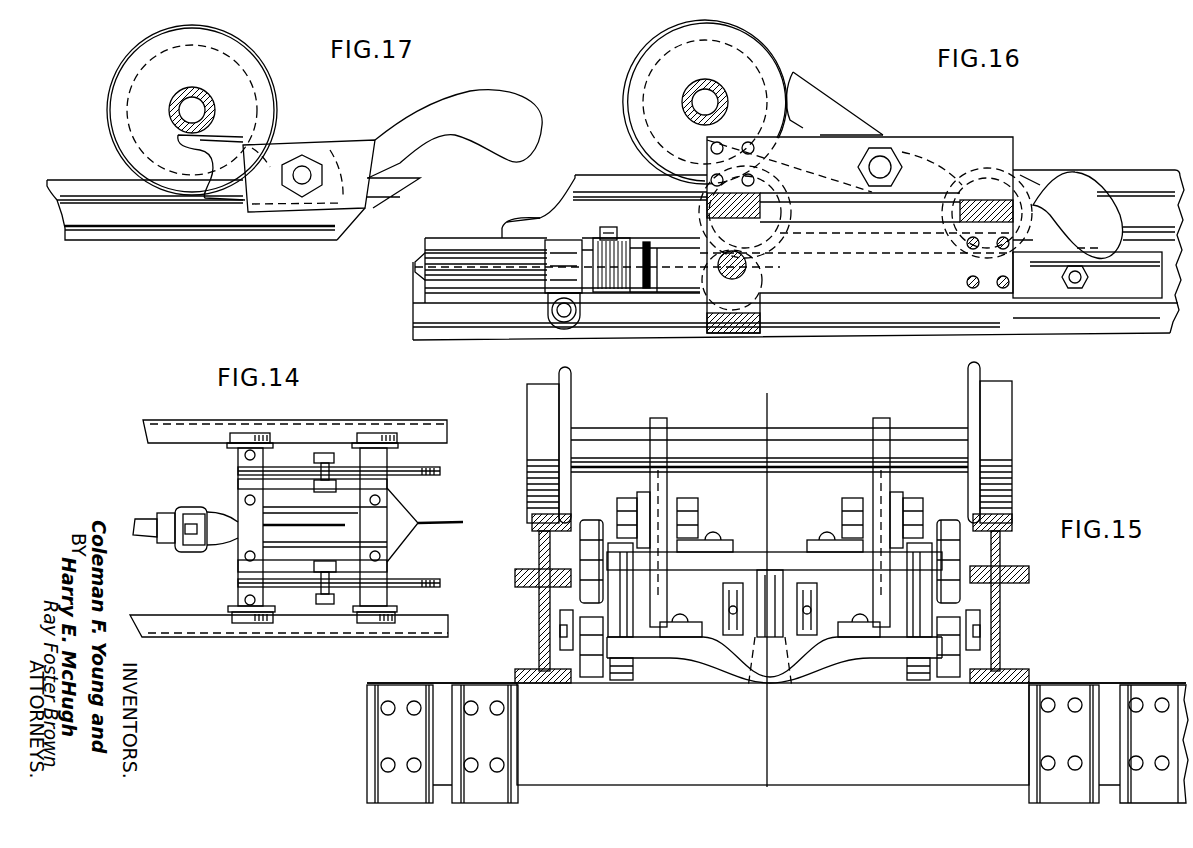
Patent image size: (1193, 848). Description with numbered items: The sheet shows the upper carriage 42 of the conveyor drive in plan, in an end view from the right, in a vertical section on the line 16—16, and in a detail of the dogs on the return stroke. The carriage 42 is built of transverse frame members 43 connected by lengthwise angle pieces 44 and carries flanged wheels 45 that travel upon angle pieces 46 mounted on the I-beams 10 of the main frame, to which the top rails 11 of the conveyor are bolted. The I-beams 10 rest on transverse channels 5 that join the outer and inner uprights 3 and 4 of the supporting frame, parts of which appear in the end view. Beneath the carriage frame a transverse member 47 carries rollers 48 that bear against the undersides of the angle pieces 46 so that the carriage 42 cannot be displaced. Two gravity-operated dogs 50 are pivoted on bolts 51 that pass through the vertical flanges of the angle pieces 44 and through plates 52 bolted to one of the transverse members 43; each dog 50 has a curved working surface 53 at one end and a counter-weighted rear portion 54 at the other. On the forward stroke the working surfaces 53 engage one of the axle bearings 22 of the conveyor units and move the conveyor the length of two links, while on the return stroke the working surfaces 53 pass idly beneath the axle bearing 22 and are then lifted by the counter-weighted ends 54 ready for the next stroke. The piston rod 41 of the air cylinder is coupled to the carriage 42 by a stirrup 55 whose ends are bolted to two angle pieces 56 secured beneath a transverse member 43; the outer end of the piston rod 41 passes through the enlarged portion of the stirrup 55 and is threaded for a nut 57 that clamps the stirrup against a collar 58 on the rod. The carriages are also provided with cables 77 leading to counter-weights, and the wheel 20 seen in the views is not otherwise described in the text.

In FIG. 15, the outer vertical channel or angle pieces 3 is at (385, 732).
In FIG. 15, the inner vertical channel or angle pieces 4 is at (503, 739).
In FIG. 15, the transverse channels 5 is at (890, 770).
In FIG. 16, the I-beams 10 is at (874, 320).
In FIG. 15, the I-beams 10 is at (548, 657).
In FIG. 17, the top rails 11 is at (73, 192).
In FIG. 16, the top rails 11 is at (629, 178).
In FIG. 15, the top rails 11 is at (539, 548).
In FIG. 15, the section line 16— 16 is at (764, 588).
In FIG. 17, the wheel 20 is at (108, 108).
In FIG. 16, the wheel 20 is at (636, 84).
In FIG. 15, the wheel 20 is at (538, 396).
In FIG. 17, the axle bearings 22 is at (191, 87).
In FIG. 16, the axle bearings 22 is at (706, 79).
In FIG. 15, the axle bearings 22 is at (718, 432).
In FIG. 16, the piston rod 41 is at (495, 268).
In FIG. 14, the piston rod 41 is at (143, 522).
In FIG. 15, the piston rod 41 is at (790, 652).
In FIG. 14, the carriage 42 is at (240, 491).
In FIG. 16, the transverse frame members 43 is at (780, 212).
In FIG. 14, the transverse frame members 43 is at (377, 523).
In FIG. 15, the transverse frame members 43 is at (773, 552).
In FIG. 17, the lengthwise angle pieces 44 is at (341, 146).
In FIG. 16, the lengthwise angle pieces 44 is at (958, 145).
In FIG. 14, the lengthwise angle pieces 44 is at (345, 484).
In FIG. 15, the lengthwise angle pieces 44 is at (692, 520).
In FIG. 16, the flanged wheels 45 is at (700, 210).
In FIG. 14, the flanged wheels 45 is at (368, 432).
In FIG. 15, the flanged wheels 45 is at (590, 522).
In FIG. 16, the angle pieces 46 is at (1105, 286).
In FIG. 14, the angle pieces 46 is at (447, 432).
In FIG. 15, the angle pieces 46 is at (560, 609).
In FIG. 15, the transverse member 47 is at (714, 650).
In FIG. 15, the rollers 48 is at (596, 678).
In FIG. 17, the gravity-operated dogs 50 is at (228, 140).
In FIG. 16, the gravity-operated dogs 50 is at (858, 118).
In FIG. 14, the gravity-operated dogs 50 is at (413, 472).
In FIG. 15, the gravity-operated dogs 50 is at (653, 416).
In FIG. 17, the bolts 51 is at (301, 152).
In FIG. 16, the bolts 51 is at (881, 158).
In FIG. 14, the bolts 51 is at (323, 452).
In FIG. 15, the bolts 51 is at (685, 488).
In FIG. 14, the plates 52 is at (302, 597).
In FIG. 15, the plates 52 is at (640, 496).
In FIG. 17, the curved working surface 53 is at (200, 158).
In FIG. 16, the curved working surface 53 is at (798, 118).
In FIG. 17, the counter-weighted rear portion 54 is at (488, 106).
In FIG. 16, the counter-weighted rear portion 54 is at (1090, 200).
In FIG. 16, the stirrup 55 is at (587, 238).
In FIG. 14, the stirrup 55 is at (183, 549).
In FIG. 15, the stirrup 55 is at (814, 662).
In FIG. 16, the angle pieces 56 is at (835, 285).
In FIG. 15, the angle pieces 56 is at (738, 584).
In FIG. 16, the nut 57 is at (620, 287).
In FIG. 14, the nut 57 is at (190, 522).
In FIG. 16, the collar 58 is at (560, 243).
In FIG. 14, the collar 58 is at (160, 535).
In FIG. 14, the cables 77 is at (443, 530).